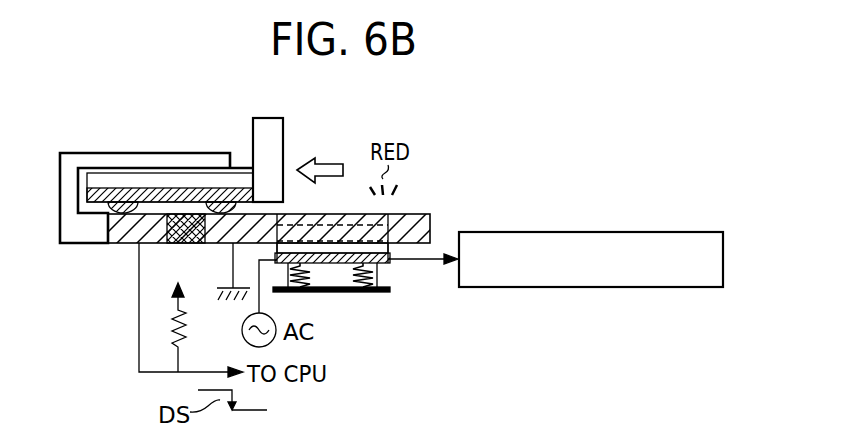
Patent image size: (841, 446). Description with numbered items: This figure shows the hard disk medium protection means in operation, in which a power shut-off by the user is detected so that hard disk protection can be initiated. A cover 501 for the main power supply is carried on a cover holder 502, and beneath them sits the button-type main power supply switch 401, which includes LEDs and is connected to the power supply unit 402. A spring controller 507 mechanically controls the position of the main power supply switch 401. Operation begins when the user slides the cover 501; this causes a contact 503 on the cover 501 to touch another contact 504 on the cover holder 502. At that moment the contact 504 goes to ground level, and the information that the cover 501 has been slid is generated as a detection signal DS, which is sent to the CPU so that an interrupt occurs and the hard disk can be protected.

The main power supply switch 401 is at (382, 212).
The power supply unit 402 is at (567, 231).
The cover 501 is at (270, 127).
The cover holder 502 is at (142, 157).
The contact 503 is at (210, 187).
The contact 504 is at (125, 246).
The spring controller 507 is at (350, 293).